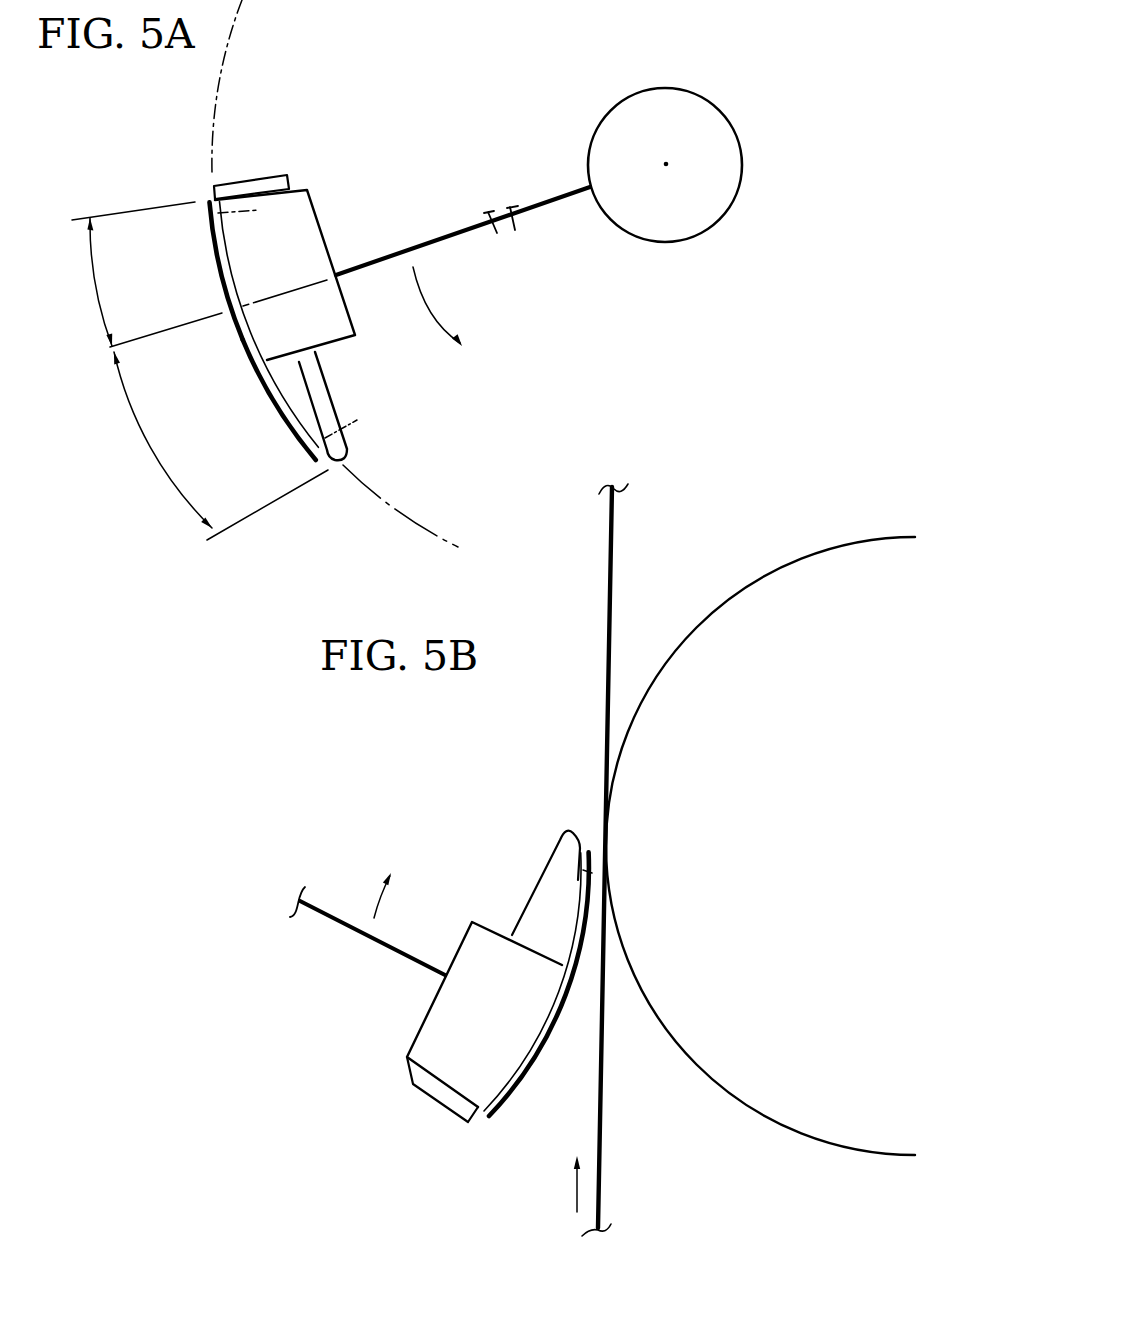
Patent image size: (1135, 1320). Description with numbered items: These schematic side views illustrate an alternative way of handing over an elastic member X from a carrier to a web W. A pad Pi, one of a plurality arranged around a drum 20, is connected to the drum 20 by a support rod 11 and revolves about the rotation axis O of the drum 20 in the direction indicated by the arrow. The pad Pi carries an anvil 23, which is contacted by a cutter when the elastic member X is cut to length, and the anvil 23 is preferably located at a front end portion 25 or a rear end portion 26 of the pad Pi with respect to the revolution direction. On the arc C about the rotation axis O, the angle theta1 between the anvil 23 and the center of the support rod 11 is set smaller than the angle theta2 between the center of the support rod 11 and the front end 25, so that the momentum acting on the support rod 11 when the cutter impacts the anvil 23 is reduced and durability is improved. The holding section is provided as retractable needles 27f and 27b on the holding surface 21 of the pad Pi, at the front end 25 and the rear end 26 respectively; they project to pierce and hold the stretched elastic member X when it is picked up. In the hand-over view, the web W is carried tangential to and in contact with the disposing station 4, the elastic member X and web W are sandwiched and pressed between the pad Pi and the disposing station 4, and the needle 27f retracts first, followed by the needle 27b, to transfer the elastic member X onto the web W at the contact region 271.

In FIG. 5B, the disposing station 4 is at (853, 538).
In FIG. 5A, the support rod 11 is at (537, 208).
In FIG. 5A, the drum 20 is at (655, 88).
In FIG. 5A, the holding surface 21 is at (222, 278).
In FIG. 5B, the holding surface 21 is at (540, 1042).
In FIG. 5A, the anvil 23 is at (213, 194).
In FIG. 5B, the anvil 23 is at (477, 1121).
In FIG. 5A, the front end portion 25 is at (341, 459).
In FIG. 5A, the rear end portion 26 is at (237, 182).
In FIG. 5A, the needle 27b is at (206, 214).
In FIG. 5B, the needle 27b is at (502, 1104).
In FIG. 5A, the needle 27f is at (309, 452).
In FIG. 5B, the contact portion of pressing pad 271 is at (606, 872).
In FIG. 5A, the pad Pi is at (307, 222).
In FIG. 5B, the pad Pi is at (436, 1043).
In FIG. 5B, the web W is at (603, 1146).
In FIG. 5A, the rotation axis O is at (669, 160).
In FIG. 5A, the arc C is at (228, 38).
In FIG. 5A, the elastic member X is at (230, 331).
In FIG. 5B, the elastic member X is at (558, 1007).
In FIG. 5A, the angle theta1 is at (77, 282).
In FIG. 5A, the angle theta2 is at (152, 440).